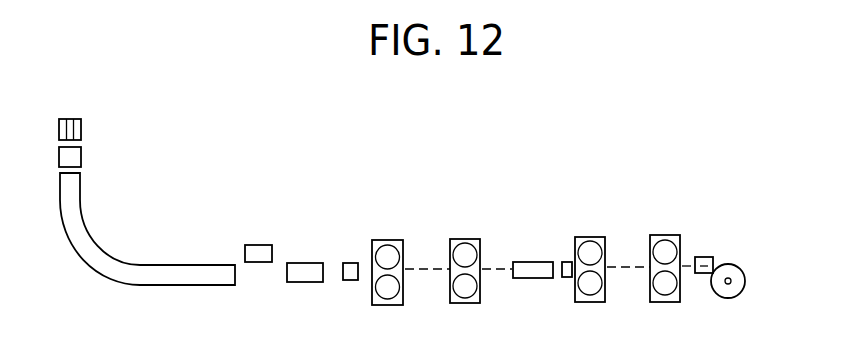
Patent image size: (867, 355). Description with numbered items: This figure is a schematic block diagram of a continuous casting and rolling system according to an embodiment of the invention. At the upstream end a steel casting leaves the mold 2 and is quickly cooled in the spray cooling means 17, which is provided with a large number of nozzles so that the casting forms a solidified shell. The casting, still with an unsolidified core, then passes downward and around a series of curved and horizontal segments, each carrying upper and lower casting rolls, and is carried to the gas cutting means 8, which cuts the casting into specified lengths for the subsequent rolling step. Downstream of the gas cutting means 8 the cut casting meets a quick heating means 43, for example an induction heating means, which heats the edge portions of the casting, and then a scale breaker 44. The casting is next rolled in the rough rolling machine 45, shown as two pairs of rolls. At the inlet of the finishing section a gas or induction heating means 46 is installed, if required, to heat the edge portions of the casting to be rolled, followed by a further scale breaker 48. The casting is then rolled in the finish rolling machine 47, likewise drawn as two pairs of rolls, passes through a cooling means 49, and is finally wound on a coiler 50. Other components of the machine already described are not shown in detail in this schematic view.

The mold 2 is at (81, 126).
The spray cooling means 17 is at (81, 157).
The gas cutting means 8 is at (258, 245).
The quick heating means 43 is at (305, 263).
The scale breaker 44 is at (348, 263).
The rough rolling machine 45 is at (470, 232).
The gas or induction heating means 46 is at (532, 262).
The scale breaker 48 is at (566, 262).
The finish rolling machine 47 is at (667, 229).
The cooling means 49 is at (704, 257).
The coiler 50 is at (728, 264).